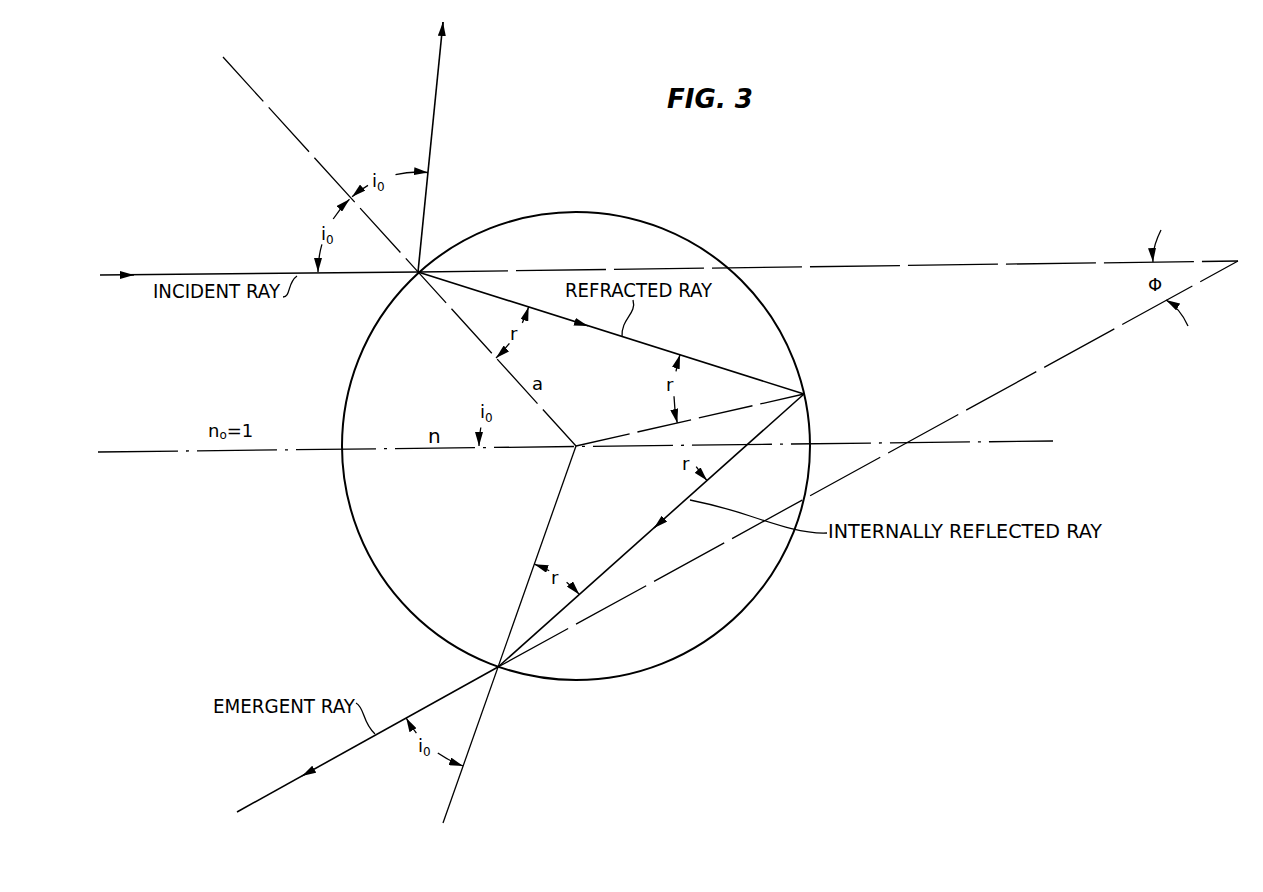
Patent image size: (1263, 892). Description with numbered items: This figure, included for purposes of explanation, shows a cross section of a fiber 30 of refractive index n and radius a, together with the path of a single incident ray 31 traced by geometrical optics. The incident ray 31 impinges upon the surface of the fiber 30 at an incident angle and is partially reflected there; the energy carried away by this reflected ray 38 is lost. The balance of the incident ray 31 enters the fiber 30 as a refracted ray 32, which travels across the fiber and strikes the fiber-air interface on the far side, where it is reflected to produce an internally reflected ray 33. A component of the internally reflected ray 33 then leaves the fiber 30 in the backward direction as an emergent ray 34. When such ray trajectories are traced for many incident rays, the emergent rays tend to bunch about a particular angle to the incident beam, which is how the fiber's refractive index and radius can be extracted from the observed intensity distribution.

The fiber 30 is at (754, 598).
The incident ray 31 is at (669, 261).
The refracted ray 32 is at (722, 369).
The internally reflected ray 33 is at (728, 462).
The emergent ray 34 is at (352, 749).
The reflected ray 38 is at (434, 118).